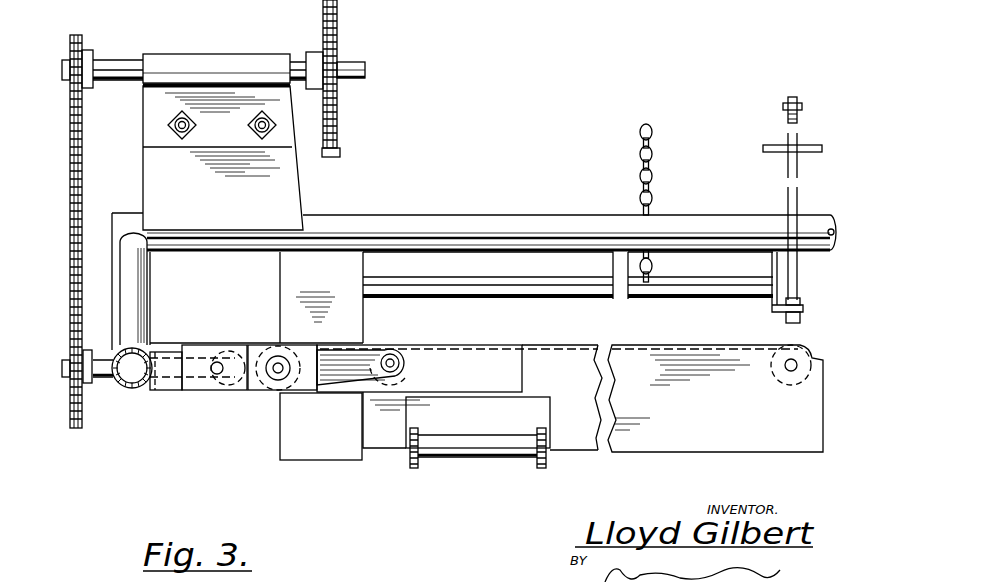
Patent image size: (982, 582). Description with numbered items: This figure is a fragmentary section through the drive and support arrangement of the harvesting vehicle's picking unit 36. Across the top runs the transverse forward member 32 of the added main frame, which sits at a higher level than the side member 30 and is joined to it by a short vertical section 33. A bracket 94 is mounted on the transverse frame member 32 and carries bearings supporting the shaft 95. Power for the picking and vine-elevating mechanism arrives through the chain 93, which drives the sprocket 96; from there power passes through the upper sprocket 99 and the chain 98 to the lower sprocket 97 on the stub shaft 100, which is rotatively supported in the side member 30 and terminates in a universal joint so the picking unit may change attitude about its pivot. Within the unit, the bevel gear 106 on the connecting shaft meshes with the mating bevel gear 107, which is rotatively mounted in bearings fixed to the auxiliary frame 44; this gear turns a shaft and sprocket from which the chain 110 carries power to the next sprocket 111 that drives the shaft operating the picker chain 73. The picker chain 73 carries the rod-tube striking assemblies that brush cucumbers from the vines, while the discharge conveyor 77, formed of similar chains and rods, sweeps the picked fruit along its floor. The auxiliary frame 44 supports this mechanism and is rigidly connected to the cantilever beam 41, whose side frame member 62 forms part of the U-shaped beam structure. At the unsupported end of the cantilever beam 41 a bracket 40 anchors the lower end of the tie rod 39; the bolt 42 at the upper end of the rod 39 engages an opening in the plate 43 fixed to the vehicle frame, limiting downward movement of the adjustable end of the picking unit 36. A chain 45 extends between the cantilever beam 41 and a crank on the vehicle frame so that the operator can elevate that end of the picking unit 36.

The side member 30 is at (143, 345).
The transverse forward member 32 is at (470, 215).
The short vertical sections 33 is at (150, 294).
The picking unit 36 is at (278, 428).
The tie rod 39 is at (785, 197).
The bracket 40 is at (772, 308).
The cantilever beam 41 is at (540, 285).
The bolt 42 is at (785, 105).
The plate 43 is at (770, 146).
The auxiliary frame 44 is at (256, 297).
The chain 45 is at (638, 155).
The side frame member 62 is at (715, 398).
The picker chain 73 is at (630, 345).
The discharge conveyor 77 is at (455, 436).
The chain 93 is at (340, 150).
The bracket 94 is at (297, 199).
The shaft 95 is at (123, 60).
The sprocket 96 is at (337, 38).
The lower sprocket 97 is at (82, 416).
The chain 98 is at (83, 181).
The upper sprocket 99 is at (88, 50).
The stub shaft 100 is at (95, 373).
The bevel gear 106 is at (252, 345).
The mating bevel gear 107 is at (270, 392).
The chain 110 is at (333, 382).
The sprocket 111 is at (400, 368).